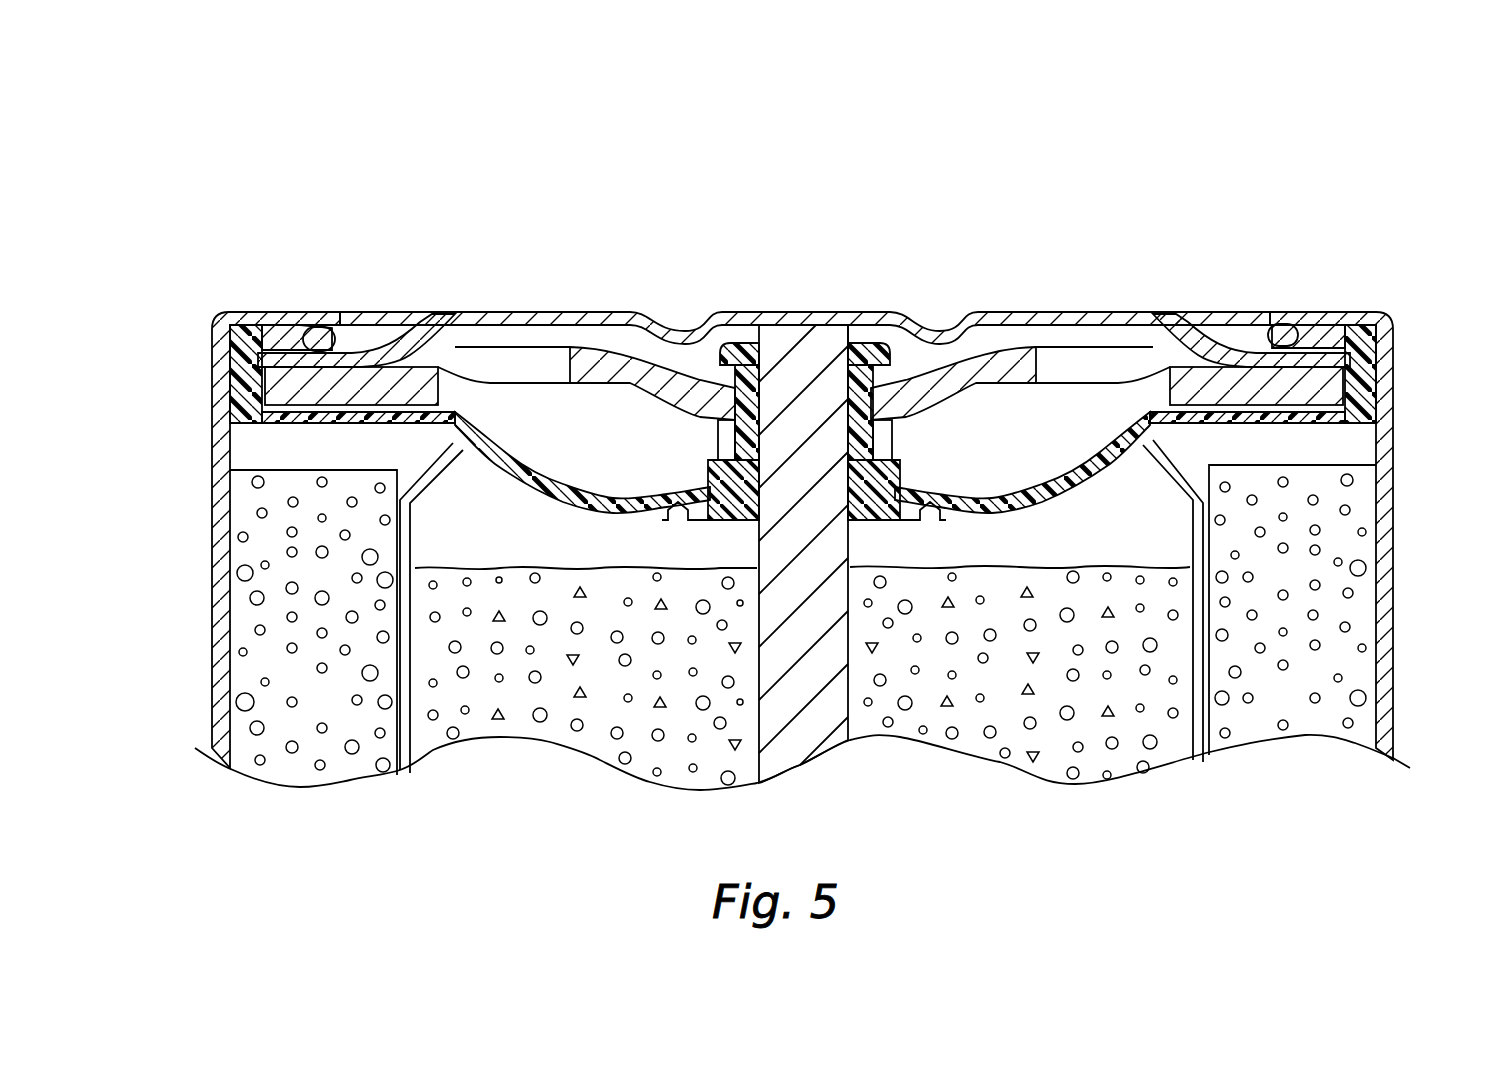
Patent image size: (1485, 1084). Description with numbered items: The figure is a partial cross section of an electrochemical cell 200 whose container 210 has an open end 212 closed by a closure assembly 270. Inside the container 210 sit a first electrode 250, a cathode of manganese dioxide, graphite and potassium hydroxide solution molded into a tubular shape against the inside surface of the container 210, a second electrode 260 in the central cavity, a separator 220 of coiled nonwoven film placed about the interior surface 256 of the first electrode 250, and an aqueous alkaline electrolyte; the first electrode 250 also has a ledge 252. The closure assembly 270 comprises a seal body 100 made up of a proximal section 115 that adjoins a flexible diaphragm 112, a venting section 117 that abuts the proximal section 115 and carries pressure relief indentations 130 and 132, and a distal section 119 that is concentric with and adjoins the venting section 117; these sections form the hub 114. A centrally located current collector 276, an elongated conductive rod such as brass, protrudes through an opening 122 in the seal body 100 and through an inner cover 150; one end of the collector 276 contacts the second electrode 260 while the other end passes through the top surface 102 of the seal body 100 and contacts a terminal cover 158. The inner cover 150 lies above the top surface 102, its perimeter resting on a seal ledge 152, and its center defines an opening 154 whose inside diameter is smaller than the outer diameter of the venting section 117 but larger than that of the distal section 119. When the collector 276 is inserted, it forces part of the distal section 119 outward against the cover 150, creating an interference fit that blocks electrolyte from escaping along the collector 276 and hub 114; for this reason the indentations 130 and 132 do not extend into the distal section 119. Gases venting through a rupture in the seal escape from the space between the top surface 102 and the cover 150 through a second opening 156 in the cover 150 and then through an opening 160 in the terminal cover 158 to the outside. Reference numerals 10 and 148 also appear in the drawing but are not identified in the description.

The electrochemical cell 10 is at (1400, 514).
The seal body 100 is at (1395, 312).
The top surface 102 is at (550, 427).
The flexible diaphragm 112 is at (582, 496).
The hub 114 is at (678, 458).
The proximal section 115 is at (1000, 497).
The venting section 117 is at (905, 434).
The distal section 119 is at (892, 408).
The opening 122 is at (762, 403).
The indentation 130 is at (718, 443).
The indentation 132 is at (898, 441).
The seal block 148 is at (917, 472).
The inner cover 150 is at (1005, 355).
The seal ledge 152 is at (248, 328).
The cover opening 154 is at (935, 352).
The second opening 156 is at (1097, 365).
The terminal cover 158 is at (510, 312).
The opening 160 is at (372, 327).
The electrochemical cell 200 is at (1077, 187).
The container 210 is at (212, 683).
The open end 212 is at (330, 320).
The separator 220 is at (1208, 555).
The first electrode 250 is at (1288, 695).
The ledge 252 is at (330, 457).
The interior surface 256 is at (397, 617).
The second electrode 260 is at (1042, 710).
The closure assembly 270 is at (548, 510).
The current collector 276 is at (800, 690).